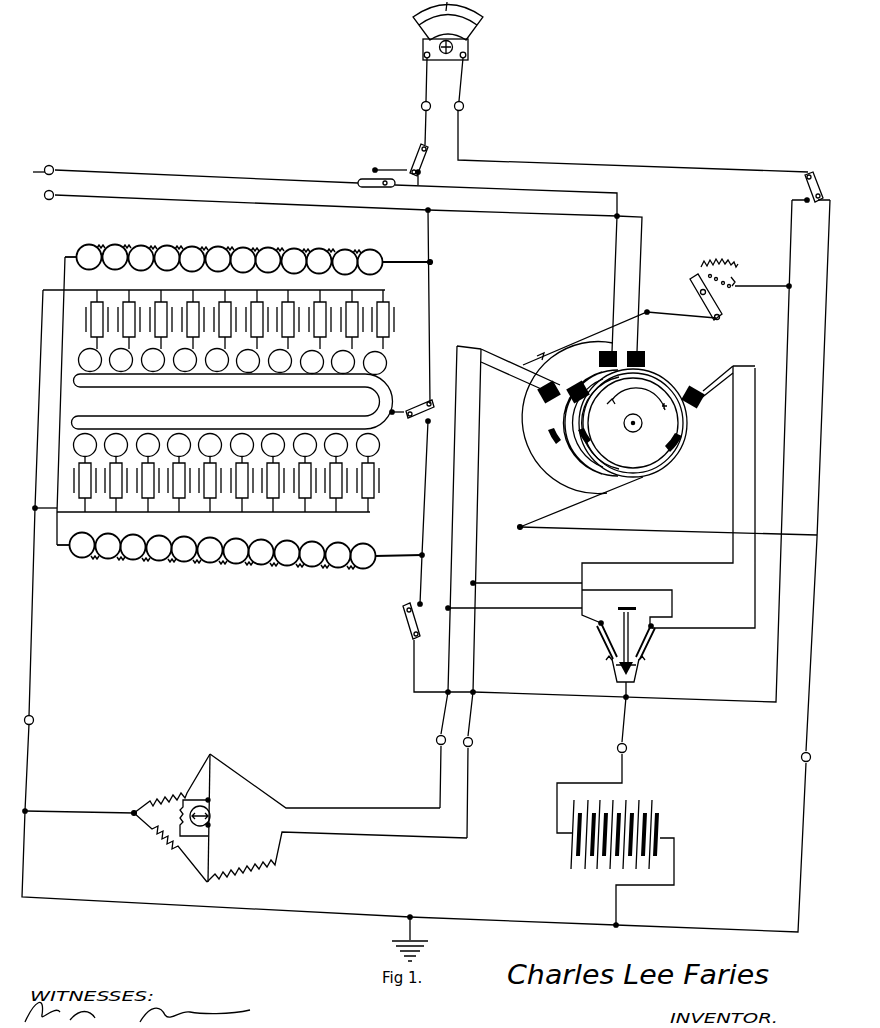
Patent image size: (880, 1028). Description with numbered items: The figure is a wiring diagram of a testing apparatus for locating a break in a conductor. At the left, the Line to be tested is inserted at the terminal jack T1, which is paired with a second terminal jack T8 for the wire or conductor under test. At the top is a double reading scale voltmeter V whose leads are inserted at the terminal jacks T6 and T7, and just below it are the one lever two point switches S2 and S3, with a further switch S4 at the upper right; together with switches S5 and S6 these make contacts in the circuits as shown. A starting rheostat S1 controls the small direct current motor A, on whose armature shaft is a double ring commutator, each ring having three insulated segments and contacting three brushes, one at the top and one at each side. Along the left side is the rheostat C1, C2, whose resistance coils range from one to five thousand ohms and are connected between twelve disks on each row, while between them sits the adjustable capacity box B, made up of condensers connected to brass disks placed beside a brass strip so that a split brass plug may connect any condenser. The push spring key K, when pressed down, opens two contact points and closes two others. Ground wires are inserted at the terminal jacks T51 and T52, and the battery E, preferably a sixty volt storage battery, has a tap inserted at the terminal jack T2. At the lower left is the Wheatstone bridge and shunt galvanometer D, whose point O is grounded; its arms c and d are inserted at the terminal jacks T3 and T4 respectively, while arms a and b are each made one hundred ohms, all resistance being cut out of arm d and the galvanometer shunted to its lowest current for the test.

The line Line is at (40, 160).
The terminal jack T1 is at (59, 163).
The terminal jack T8 is at (59, 188).
The double reading scale voltmeter V is at (448, 51).
The terminal jack T6 is at (415, 118).
The terminal jack T7 is at (469, 101).
The one lever two point switch S2 is at (378, 174).
The one lever two point switch S3 is at (427, 164).
The one lever two point switch S4 is at (815, 187).
The starting rheostat S1 is at (721, 292).
The rheostat C1 is at (248, 251).
The rheostat C2 is at (239, 562).
The adjustable capacity box B is at (226, 401).
The one lever two point switch S6 is at (427, 413).
The one lever two point switch S5 is at (403, 626).
The direct current motor A is at (607, 418).
The push spring key K is at (635, 644).
The terminal jack T51 is at (40, 715).
The terminal jack T3 is at (434, 735).
The terminal jack T4 is at (477, 737).
The terminal jack T2 is at (634, 742).
The terminal jack T52 is at (794, 750).
The battery E is at (637, 841).
The Wheatstone bridge and shunt galvanometer D is at (246, 818).
The point o O is at (132, 808).
The bridge arm a is at (172, 783).
The bridge arm b is at (170, 847).
The bridge arm c is at (325, 781).
The bridge arm d is at (337, 857).